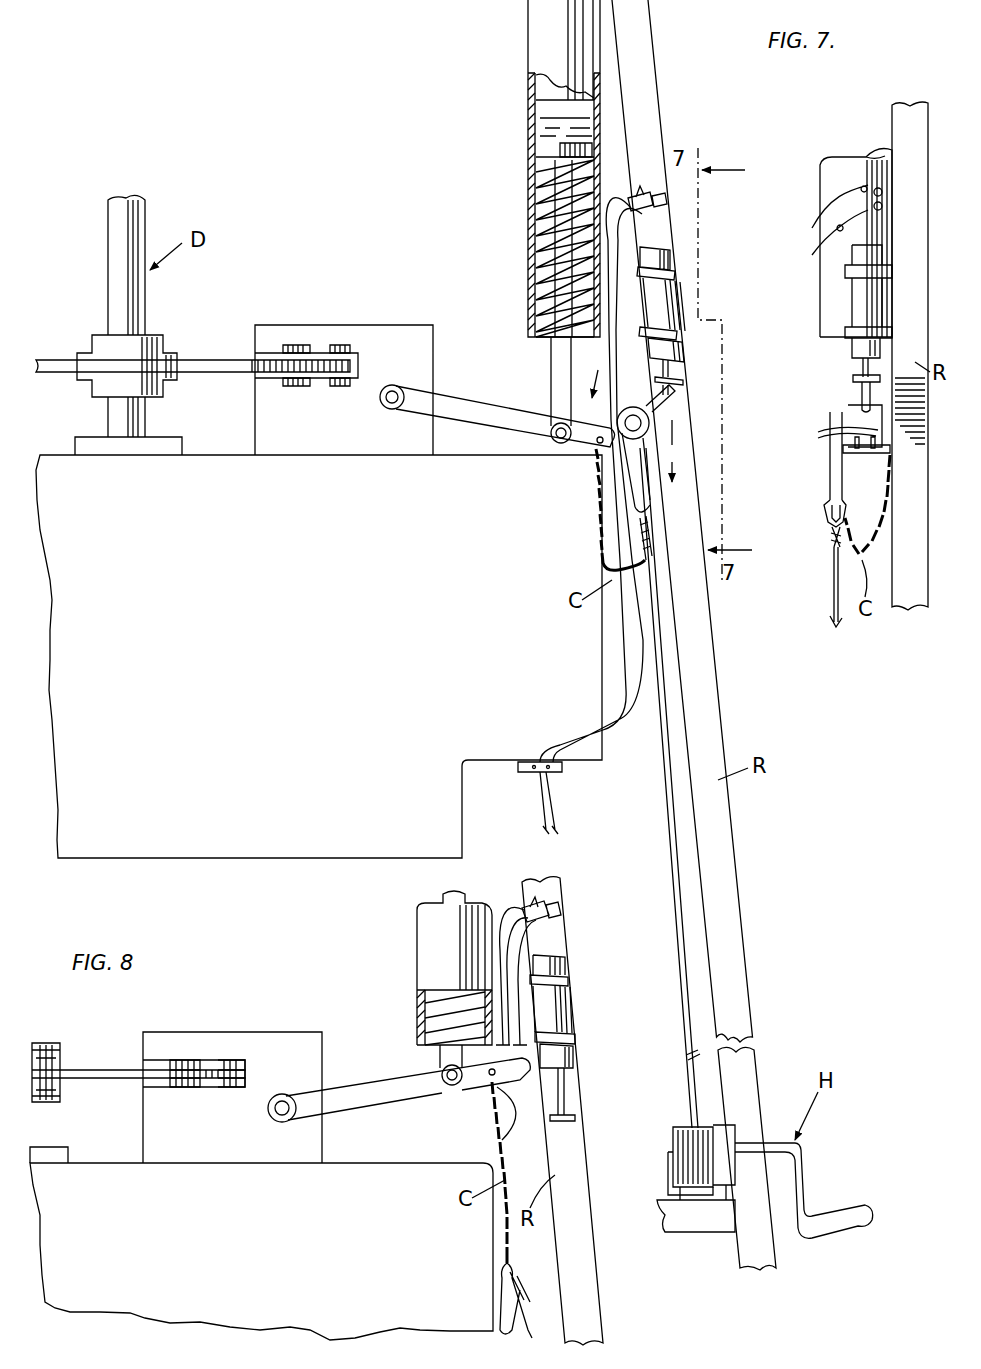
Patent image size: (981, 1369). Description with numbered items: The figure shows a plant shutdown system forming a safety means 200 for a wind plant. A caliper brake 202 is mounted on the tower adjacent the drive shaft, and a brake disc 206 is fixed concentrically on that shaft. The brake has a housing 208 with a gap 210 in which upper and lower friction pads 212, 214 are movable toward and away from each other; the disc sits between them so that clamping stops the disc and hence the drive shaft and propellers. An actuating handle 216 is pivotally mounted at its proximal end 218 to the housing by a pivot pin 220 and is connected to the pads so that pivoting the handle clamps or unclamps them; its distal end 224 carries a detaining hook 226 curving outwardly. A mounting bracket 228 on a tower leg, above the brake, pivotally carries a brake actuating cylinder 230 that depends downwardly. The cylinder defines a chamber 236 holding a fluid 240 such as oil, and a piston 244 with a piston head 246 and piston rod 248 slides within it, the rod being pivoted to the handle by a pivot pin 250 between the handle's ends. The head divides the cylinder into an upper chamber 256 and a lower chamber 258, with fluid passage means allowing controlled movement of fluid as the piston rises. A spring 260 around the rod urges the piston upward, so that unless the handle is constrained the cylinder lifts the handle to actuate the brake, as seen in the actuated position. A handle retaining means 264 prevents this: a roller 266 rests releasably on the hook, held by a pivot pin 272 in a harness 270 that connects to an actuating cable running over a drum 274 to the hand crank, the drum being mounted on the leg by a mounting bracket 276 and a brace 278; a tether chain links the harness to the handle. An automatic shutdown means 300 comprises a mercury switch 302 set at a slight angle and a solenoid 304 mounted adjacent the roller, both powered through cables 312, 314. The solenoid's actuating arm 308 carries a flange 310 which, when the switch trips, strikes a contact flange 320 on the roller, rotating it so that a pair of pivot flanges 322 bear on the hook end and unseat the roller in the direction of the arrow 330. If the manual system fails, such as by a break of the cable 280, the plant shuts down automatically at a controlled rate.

In FIG. 6, the safety means 200 is at (372, 150).
In FIG. 6, the caliper brake 202 is at (346, 305).
In FIG. 8, the caliper brake 202 is at (300, 1020).
In FIG. 6, the brake disc 206 is at (207, 355).
In FIG. 8, the brake disc 206 is at (117, 1080).
In FIG. 6, the housing 208 is at (392, 345).
In FIG. 8, the housing 208 is at (232, 1042).
In FIG. 6, the gap 210 is at (272, 355).
In FIG. 6, the upper friction pad 212 is at (303, 357).
In FIG. 8, the upper friction pad 212 is at (186, 1062).
In FIG. 6, the lower friction pad 214 is at (302, 388).
In FIG. 8, the lower friction pad 214 is at (190, 1090).
In FIG. 6, the actuating handle 216 is at (460, 410).
In FIG. 8, the actuating handle 216 is at (378, 1090).
In FIG. 6, the proximal end 218 is at (412, 392).
In FIG. 6, the pivot pin 220 is at (392, 410).
In FIG. 6, the distal end 224 is at (597, 371).
In FIG. 6, the detaining hook 226 is at (598, 480).
In FIG. 7, the detaining hook 226 is at (868, 453).
In FIG. 8, the detaining hook 226 is at (497, 1130).
In FIG. 6, the mounting bracket 228 is at (510, 0).
In FIG. 6, the brake actuating cylinder 230 is at (525, 112).
In FIG. 7, the brake actuating cylinder 230 is at (838, 272).
In FIG. 8, the brake actuating cylinder 230 is at (410, 928).
In FIG. 6, the chamber 236 is at (536, 130).
In FIG. 6, the fluid 240 is at (572, 127).
In FIG. 6, the piston 244 is at (540, 218).
In FIG. 6, the piston head 246 is at (596, 150).
In FIG. 6, the piston rod 248 is at (555, 262).
In FIG. 8, the piston rod 248 is at (458, 1052).
In FIG. 6, the pivot pin 250 is at (557, 438).
In FIG. 8, the pivot pin 250 is at (447, 1085).
In FIG. 6, the upper chamber 256 is at (570, 114).
In FIG. 6, the lower chamber 258 is at (545, 290).
In FIG. 6, the spring 260 is at (548, 345).
In FIG. 6, the handle retaining means 264 is at (660, 497).
In FIG. 6, the roller 266 is at (652, 423).
In FIG. 7, the roller 266 is at (848, 410).
In FIG. 6, the harness 270 is at (622, 490).
In FIG. 7, the harness 270 is at (832, 470).
In FIG. 8, the harness 270 is at (510, 1310).
In FIG. 6, the pivot pin 272 is at (598, 446).
In FIG. 6, the drum 274 is at (678, 1130).
In FIG. 6, the mounting bracket 276 is at (672, 1187).
In FIG. 6, the brace 278 is at (684, 1222).
In FIG. 7, the cable 280 is at (833, 576).
In FIG. 6, the automatic shutdown means 300 is at (680, 256).
In FIG. 7, the automatic shutdown means 300 is at (850, 310).
In FIG. 8, the automatic shutdown means 300 is at (577, 1008).
In FIG. 6, the mercury switch 302 is at (650, 198).
In FIG. 8, the mercury switch 302 is at (545, 902).
In FIG. 6, the solenoid 304 is at (674, 308).
In FIG. 8, the solenoid 304 is at (560, 962).
In FIG. 6, the actuating arm 308 is at (686, 362).
In FIG. 7, the actuating arm 308 is at (862, 372).
In FIG. 8, the actuating arm 308 is at (572, 1090).
In FIG. 6, the flange 310 is at (684, 381).
In FIG. 8, the flange 310 is at (572, 1120).
In FIG. 6, the cable 312 is at (572, 708).
In FIG. 7, the cable 312 is at (808, 228).
In FIG. 6, the cable 314 is at (576, 730).
In FIG. 7, the cable 314 is at (812, 255).
In FIG. 6, the contact flange 320 is at (670, 395).
In FIG. 7, the contact flange 320 is at (860, 392).
In FIG. 6, the pivot flanges 322 is at (666, 404).
In FIG. 7, the pivot flanges 322 is at (818, 433).
In FIG. 6, the arrow 330 is at (674, 470).